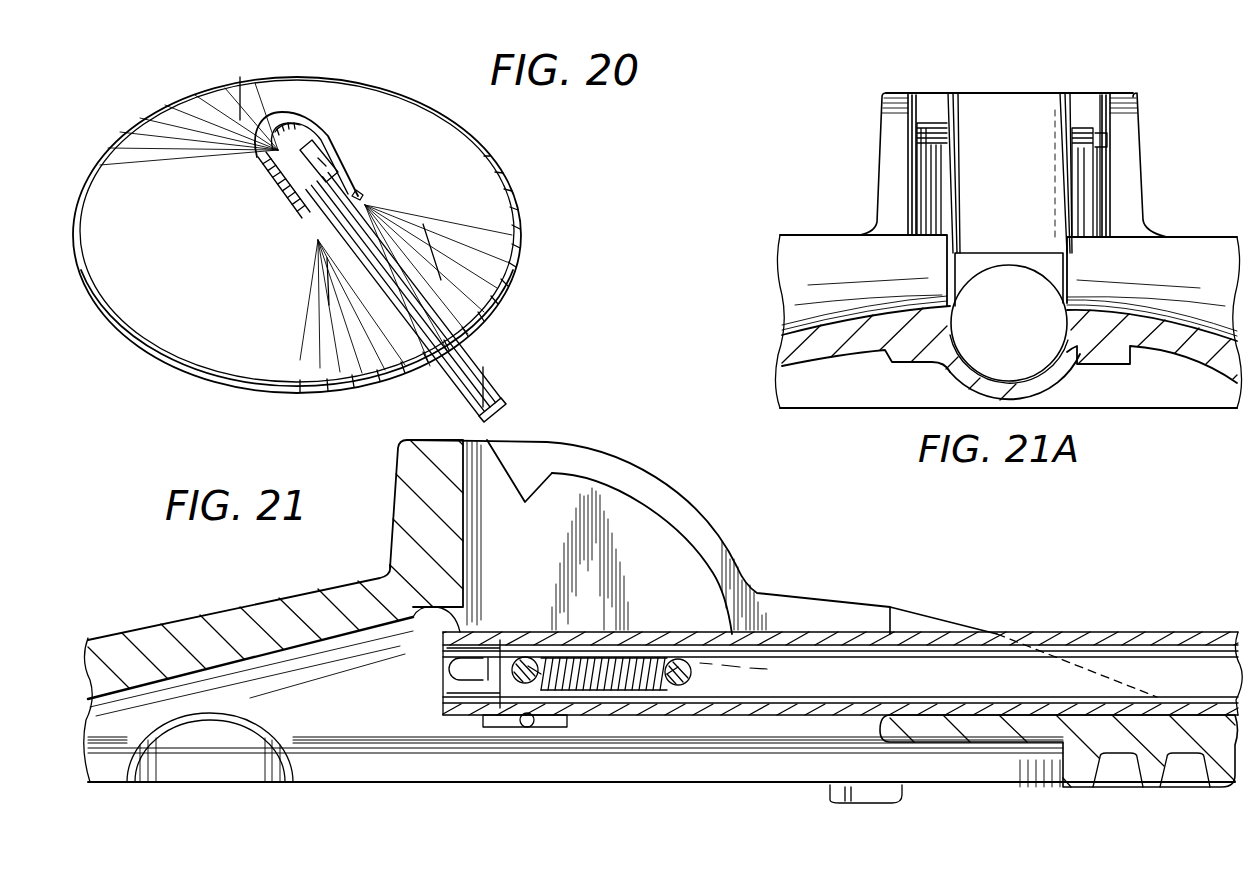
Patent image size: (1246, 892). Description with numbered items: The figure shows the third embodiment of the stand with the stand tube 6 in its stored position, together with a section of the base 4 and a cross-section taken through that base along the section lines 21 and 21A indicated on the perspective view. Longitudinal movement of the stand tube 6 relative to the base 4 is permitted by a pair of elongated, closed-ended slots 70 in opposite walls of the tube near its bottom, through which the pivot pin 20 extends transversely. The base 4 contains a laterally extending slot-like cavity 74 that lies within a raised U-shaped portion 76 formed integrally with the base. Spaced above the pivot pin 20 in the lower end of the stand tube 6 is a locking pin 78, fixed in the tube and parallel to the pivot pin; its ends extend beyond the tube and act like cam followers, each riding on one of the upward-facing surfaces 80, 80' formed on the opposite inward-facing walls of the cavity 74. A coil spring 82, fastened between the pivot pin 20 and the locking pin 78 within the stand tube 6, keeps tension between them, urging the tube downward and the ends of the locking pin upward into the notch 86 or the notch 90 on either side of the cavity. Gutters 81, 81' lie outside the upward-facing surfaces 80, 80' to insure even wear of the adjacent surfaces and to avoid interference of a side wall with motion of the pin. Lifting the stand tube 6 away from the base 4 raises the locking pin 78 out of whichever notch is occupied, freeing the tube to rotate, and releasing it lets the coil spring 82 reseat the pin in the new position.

In FIG. 20, the base 4 is at (172, 350).
In FIG. 21, the base 4 is at (237, 617).
In FIG. 21A, the base 4 is at (1197, 349).
In FIG. 20, the stand tube 6 is at (468, 360).
In FIG. 21A, the stand tube 6 is at (1032, 262).
In FIG. 21, the pivot pin 20 is at (540, 680).
In FIG. 20, the section line 21- 21 is at (240, 100).
In FIG. 20, the section line 21A- 21A is at (425, 240).
In FIG. 21, the elongated closed-ended slots 70 is at (467, 670).
In FIG. 20, the slot-like cavity 74 is at (297, 158).
In FIG. 21, the slot-like cavity 74 is at (604, 508).
In FIG. 21A, the slot-like cavity 74 is at (1012, 191).
In FIG. 21, the raised U-shaped portion 76 is at (398, 462).
In FIG. 21A, the raised U-shaped portion 76 is at (879, 142).
In FIG. 21, the locking pin 78 is at (675, 690).
In FIG. 20, the upward-facing surface 80 is at (333, 165).
In FIG. 21, the upward-facing surface 80 is at (782, 568).
In FIG. 21A, the upward-facing surface 80 is at (1065, 146).
In FIG. 21A, the upward-facing surface 80' is at (952, 145).
In FIG. 21A, the gutter 81 is at (1099, 146).
In FIG. 21A, the gutter 81' is at (912, 142).
In FIG. 21, the coil spring 82 is at (690, 636).
In FIG. 20, the notch 86 is at (312, 142).
In FIG. 21, the notch 86 is at (523, 478).
In FIG. 21, the notch 90 is at (753, 671).